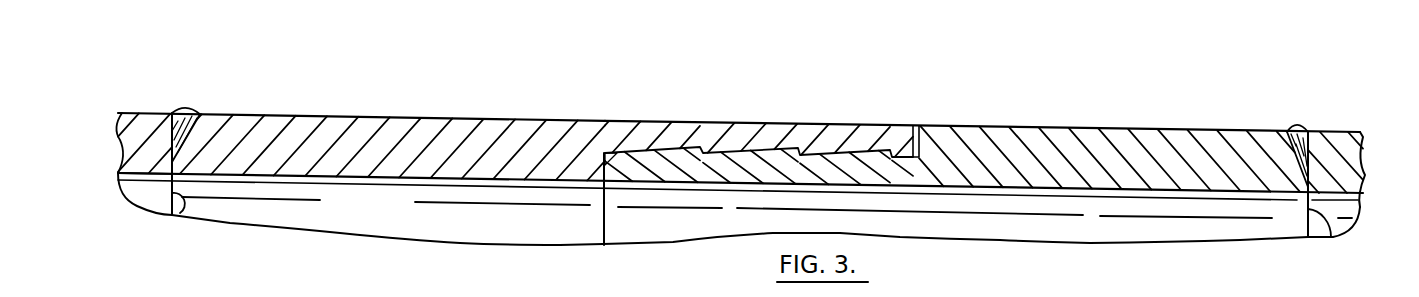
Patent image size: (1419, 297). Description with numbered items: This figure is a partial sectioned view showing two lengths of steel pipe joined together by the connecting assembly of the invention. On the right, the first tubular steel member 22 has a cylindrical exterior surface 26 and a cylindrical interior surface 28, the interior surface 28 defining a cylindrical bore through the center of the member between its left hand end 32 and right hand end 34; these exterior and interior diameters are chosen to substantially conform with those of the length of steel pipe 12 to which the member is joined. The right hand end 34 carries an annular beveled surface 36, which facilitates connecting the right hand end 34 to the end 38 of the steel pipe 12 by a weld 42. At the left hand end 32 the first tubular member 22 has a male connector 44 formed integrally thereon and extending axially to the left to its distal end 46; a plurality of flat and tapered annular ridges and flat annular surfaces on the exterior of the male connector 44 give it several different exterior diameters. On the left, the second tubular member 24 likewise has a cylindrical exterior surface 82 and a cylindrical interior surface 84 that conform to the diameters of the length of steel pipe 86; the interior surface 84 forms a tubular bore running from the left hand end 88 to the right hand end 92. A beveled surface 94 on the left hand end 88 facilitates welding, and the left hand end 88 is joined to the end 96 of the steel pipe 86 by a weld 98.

The length of steel pipe 12 is at (1352, 131).
The first tubular steel member 22 is at (1137, 125).
The second tubular member 24 is at (430, 115).
The cylindrical exterior surface 26 is at (1040, 127).
The cylindrical interior surface 28 is at (1150, 195).
The left hand end 32 is at (917, 127).
The right hand end 34 is at (1326, 232).
The annular beveled surface 36 is at (1290, 128).
The end of the length of steel pipe 38 is at (1303, 215).
The weld 42 is at (1305, 128).
The male connector 44 is at (777, 145).
The distal end of the male connector 46 is at (595, 238).
The cylindrical exterior surface 82 is at (318, 117).
The cylindrical interior surface 84 is at (382, 185).
The length of steel pipe 86 is at (128, 112).
The left hand end 88 is at (158, 197).
The right hand end 92 is at (608, 152).
The beveled surface 94 is at (204, 115).
The end of the length of steel pipe 96 is at (181, 214).
The weld 98 is at (186, 110).